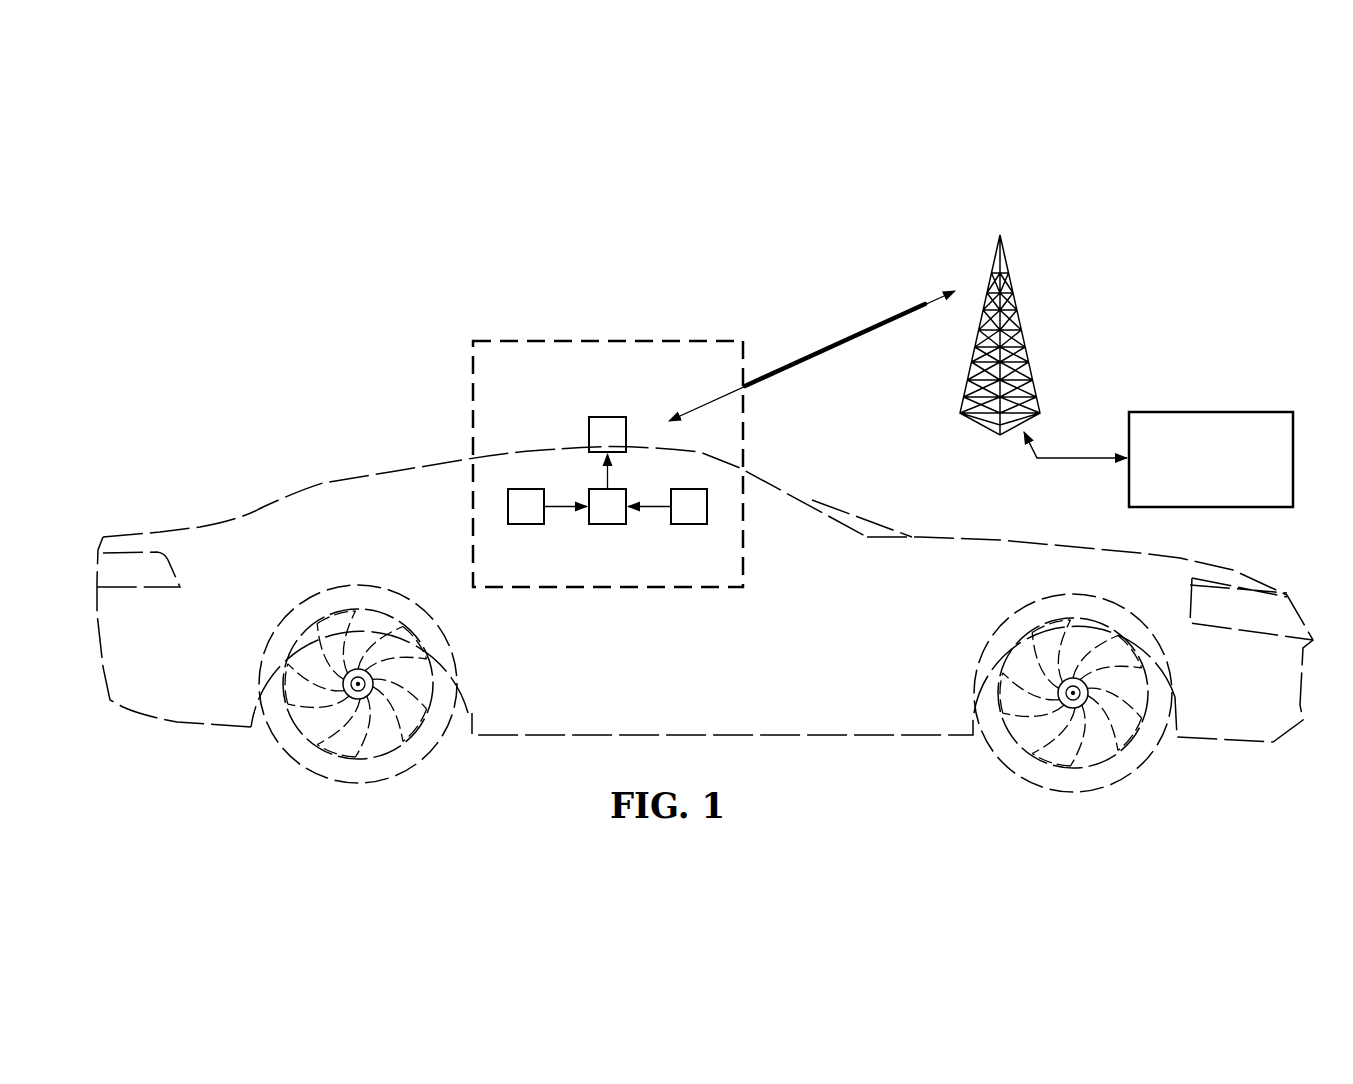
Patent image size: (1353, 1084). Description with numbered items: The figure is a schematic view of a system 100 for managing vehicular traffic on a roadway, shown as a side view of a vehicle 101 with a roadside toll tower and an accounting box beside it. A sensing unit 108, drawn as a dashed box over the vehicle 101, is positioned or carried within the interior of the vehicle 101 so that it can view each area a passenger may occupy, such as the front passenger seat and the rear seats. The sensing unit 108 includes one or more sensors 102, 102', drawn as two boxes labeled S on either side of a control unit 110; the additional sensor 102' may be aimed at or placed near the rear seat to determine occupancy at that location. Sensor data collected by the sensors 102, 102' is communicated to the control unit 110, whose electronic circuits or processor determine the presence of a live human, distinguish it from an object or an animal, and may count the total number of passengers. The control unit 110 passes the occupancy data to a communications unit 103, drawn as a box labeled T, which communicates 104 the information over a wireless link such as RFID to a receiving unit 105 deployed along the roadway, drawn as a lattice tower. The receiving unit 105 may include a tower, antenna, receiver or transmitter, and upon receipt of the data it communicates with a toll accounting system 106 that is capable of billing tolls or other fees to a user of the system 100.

The system 100 is at (376, 232).
The vehicle 101 is at (395, 468).
The sensor 102 is at (676, 536).
The sensor 102' is at (538, 536).
The communications unit 103 is at (602, 415).
The communication 104 is at (797, 358).
The receiving unit 105 is at (1025, 333).
The toll accounting system 106 is at (1210, 410).
The sensing unit 108 is at (503, 338).
The control unit 110 is at (600, 524).